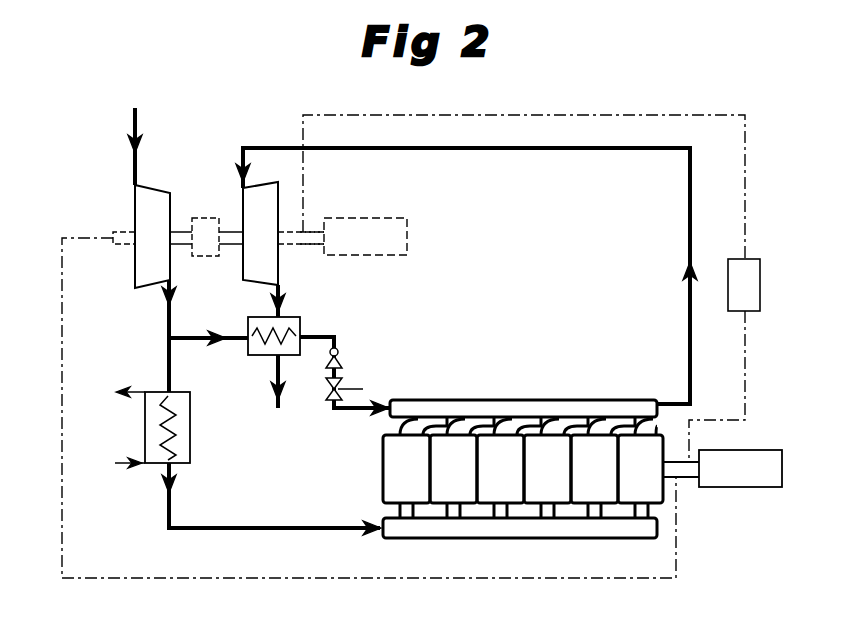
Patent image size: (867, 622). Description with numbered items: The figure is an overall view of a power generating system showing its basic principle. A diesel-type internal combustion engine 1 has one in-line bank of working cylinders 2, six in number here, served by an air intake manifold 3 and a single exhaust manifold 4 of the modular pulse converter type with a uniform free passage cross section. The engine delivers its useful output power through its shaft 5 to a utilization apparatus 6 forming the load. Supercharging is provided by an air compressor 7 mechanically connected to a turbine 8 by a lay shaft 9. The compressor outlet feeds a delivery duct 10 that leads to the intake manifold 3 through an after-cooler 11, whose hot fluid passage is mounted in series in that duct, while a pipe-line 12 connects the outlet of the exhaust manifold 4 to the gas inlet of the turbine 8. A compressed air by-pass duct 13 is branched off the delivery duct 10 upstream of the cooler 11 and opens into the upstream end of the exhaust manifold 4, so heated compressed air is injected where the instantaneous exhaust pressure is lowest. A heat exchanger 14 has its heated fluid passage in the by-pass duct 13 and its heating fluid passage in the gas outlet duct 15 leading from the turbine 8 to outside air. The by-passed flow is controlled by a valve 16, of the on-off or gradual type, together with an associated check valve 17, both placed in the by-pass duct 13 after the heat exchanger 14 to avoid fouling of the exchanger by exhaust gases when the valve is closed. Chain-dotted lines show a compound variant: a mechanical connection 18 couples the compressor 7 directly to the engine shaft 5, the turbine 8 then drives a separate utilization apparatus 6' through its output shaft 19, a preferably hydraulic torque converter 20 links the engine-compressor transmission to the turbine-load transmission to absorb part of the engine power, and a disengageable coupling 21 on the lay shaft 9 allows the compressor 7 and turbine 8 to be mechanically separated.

The internal combustion engine 1 is at (494, 469).
The working cylinders 2 is at (382, 472).
The air intake manifold 3 is at (500, 538).
The exhaust manifold 4 is at (562, 400).
The engine shaft 5 is at (686, 479).
The utilization apparatus 6 is at (740, 446).
The utilization apparatus 6' is at (365, 219).
The air compressor 7 is at (143, 202).
The turbine 8 is at (258, 192).
The lay shaft 9 is at (185, 233).
The delivery duct 10 is at (168, 312).
The after-cooler 11 is at (145, 435).
The pipe-line 12 is at (573, 150).
The compressed air by-pass duct 13 is at (334, 412).
The heat exchanger 14 is at (248, 322).
The gas outlet duct 15 is at (278, 405).
The valve 16 is at (342, 380).
The check valve 17 is at (342, 351).
The mechanical connection 18 is at (125, 577).
The turbine output shaft 19 is at (307, 246).
The hydraulic torque converter 20 is at (760, 266).
The disengageable coupling 21 is at (205, 218).